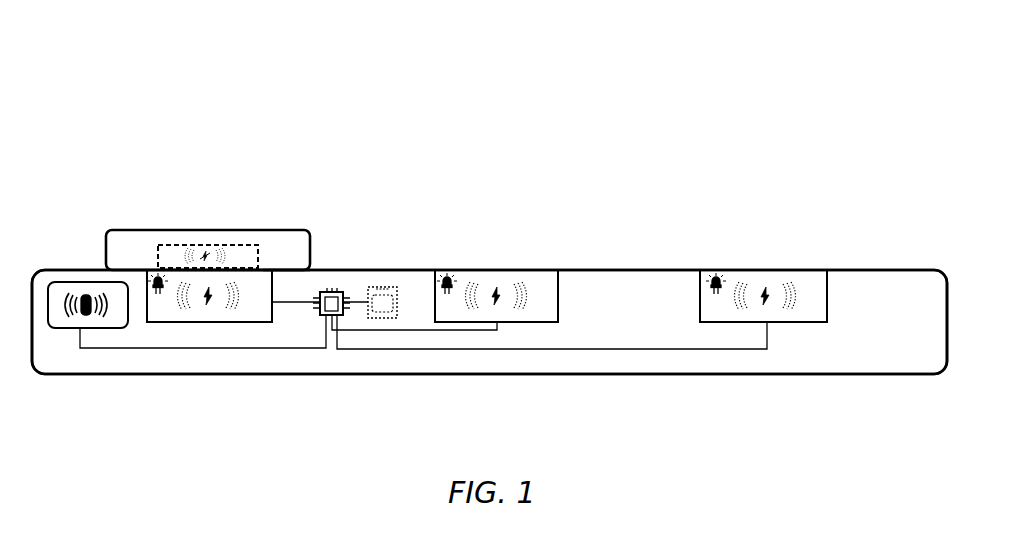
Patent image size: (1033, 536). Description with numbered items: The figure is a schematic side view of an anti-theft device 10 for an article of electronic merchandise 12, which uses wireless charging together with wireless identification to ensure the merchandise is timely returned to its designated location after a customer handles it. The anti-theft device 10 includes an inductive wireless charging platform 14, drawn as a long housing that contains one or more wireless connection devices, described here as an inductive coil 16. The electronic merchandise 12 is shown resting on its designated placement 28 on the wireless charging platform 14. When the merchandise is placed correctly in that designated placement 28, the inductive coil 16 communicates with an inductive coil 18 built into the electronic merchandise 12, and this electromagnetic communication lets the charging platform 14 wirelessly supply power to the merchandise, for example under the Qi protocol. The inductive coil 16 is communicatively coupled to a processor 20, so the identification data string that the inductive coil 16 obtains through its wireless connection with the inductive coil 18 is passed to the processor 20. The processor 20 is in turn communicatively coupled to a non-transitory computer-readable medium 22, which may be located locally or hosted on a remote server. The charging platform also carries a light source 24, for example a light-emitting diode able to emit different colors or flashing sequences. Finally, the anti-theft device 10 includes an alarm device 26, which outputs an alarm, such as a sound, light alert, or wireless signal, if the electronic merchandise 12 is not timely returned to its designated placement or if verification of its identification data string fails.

The anti-theft device 10 is at (496, 101).
The electronic merchandise 12 is at (263, 230).
The inductive wireless charging platform 14 is at (602, 268).
The inductive coil 16 is at (227, 310).
The inductive coil 18 is at (192, 245).
The processor 20 is at (332, 288).
The non-transitory computer-readable medium 22 is at (387, 287).
The light source 24 is at (156, 277).
The alarm device 26 is at (72, 282).
The designated placement 28 is at (263, 268).